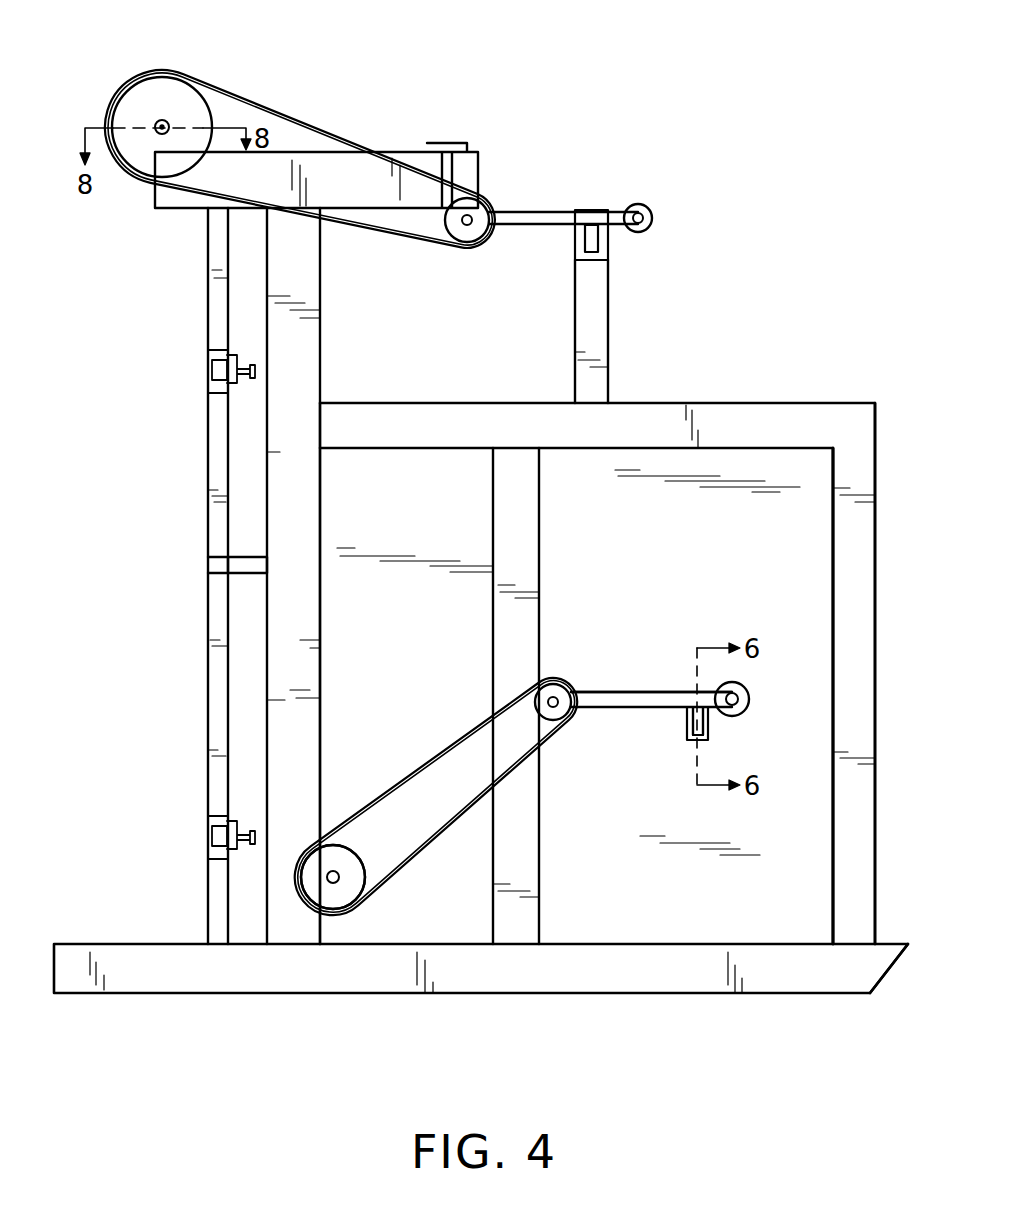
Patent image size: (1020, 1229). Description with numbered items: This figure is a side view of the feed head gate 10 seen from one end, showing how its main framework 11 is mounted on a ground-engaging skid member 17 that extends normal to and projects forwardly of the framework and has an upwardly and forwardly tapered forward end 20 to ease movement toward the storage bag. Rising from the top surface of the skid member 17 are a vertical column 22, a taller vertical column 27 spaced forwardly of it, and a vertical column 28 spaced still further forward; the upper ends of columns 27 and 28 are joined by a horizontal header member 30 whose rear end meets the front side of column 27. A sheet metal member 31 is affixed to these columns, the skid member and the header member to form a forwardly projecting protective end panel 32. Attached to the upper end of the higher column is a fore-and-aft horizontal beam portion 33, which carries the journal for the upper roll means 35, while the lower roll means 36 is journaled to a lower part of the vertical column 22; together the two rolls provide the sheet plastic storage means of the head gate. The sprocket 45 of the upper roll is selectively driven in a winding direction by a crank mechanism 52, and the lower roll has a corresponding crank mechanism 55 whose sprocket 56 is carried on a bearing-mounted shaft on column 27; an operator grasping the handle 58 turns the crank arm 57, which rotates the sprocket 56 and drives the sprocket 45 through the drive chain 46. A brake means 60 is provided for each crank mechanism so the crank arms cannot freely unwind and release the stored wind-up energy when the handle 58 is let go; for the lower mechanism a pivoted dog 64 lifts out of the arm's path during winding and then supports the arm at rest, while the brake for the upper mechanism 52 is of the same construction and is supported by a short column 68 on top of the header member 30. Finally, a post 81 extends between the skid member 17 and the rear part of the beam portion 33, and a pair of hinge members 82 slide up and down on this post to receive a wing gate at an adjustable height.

The feed head gate 10 is at (733, 308).
The main framework 11 is at (323, 637).
The skid member 17 is at (620, 983).
The tapered forward end 20 is at (893, 978).
The vertical column 22 is at (308, 520).
The vertical column 27 is at (528, 858).
The vertical column 28 is at (847, 878).
The horizontal header member 30 is at (777, 413).
The sheet metal member 31 is at (635, 537).
The protective end panel 32 is at (877, 539).
The horizontal beam portion 33 is at (343, 168).
The upper roll means 35 is at (185, 62).
The lower roll means 36 is at (343, 925).
The sprocket 45 is at (148, 102).
The drive chain 46 is at (437, 845).
The crank mechanism 52 is at (530, 196).
The crank mechanism 55 is at (632, 692).
The sprocket 56 is at (556, 686).
The crank arm 57 is at (650, 708).
The handle 58 is at (750, 698).
The brake means 60 is at (577, 242).
The dog 64 is at (693, 722).
The short column 68 is at (597, 340).
The post 81 is at (208, 670).
The hinge member 82 is at (208, 373).